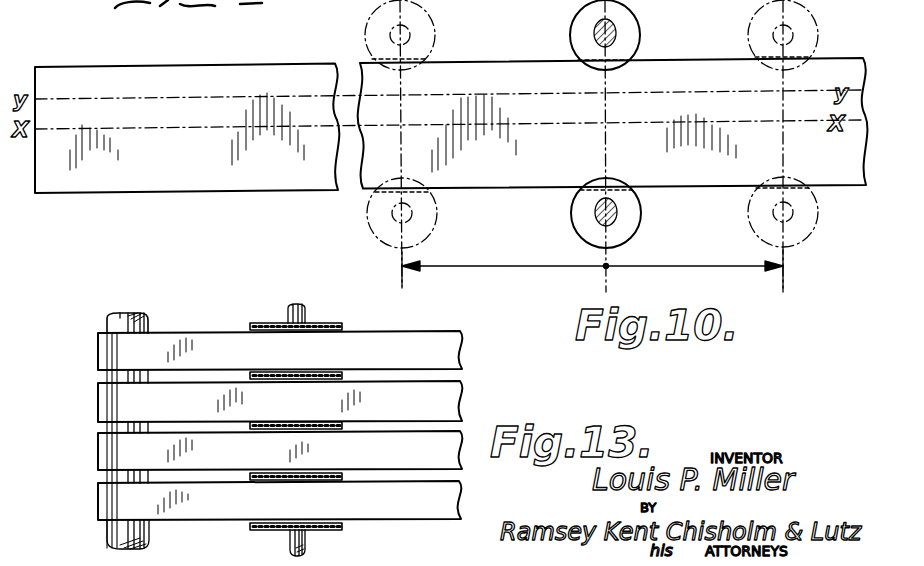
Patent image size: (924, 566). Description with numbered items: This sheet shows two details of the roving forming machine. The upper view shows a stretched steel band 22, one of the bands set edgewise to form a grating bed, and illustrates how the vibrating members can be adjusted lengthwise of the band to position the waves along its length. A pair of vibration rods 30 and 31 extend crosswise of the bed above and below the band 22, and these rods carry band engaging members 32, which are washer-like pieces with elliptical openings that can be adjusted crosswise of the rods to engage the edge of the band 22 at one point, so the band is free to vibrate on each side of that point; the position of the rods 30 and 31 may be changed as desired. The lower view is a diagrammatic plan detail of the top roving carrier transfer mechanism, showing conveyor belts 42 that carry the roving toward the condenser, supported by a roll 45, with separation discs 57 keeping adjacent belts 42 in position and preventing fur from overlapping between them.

In FIG. 10, the stretched steel band 22 is at (163, 67).
In FIG. 10, the vibration rod 30 is at (616, 30).
In FIG. 10, the vibration rod 31 is at (617, 214).
In FIG. 10, the band engaging member 32 is at (623, 234).
In FIG. 13, the conveyor belt 42 is at (280, 425).
In FIG. 13, the roll 45 is at (146, 328).
In FIG. 13, the separation disc 57 is at (342, 325).